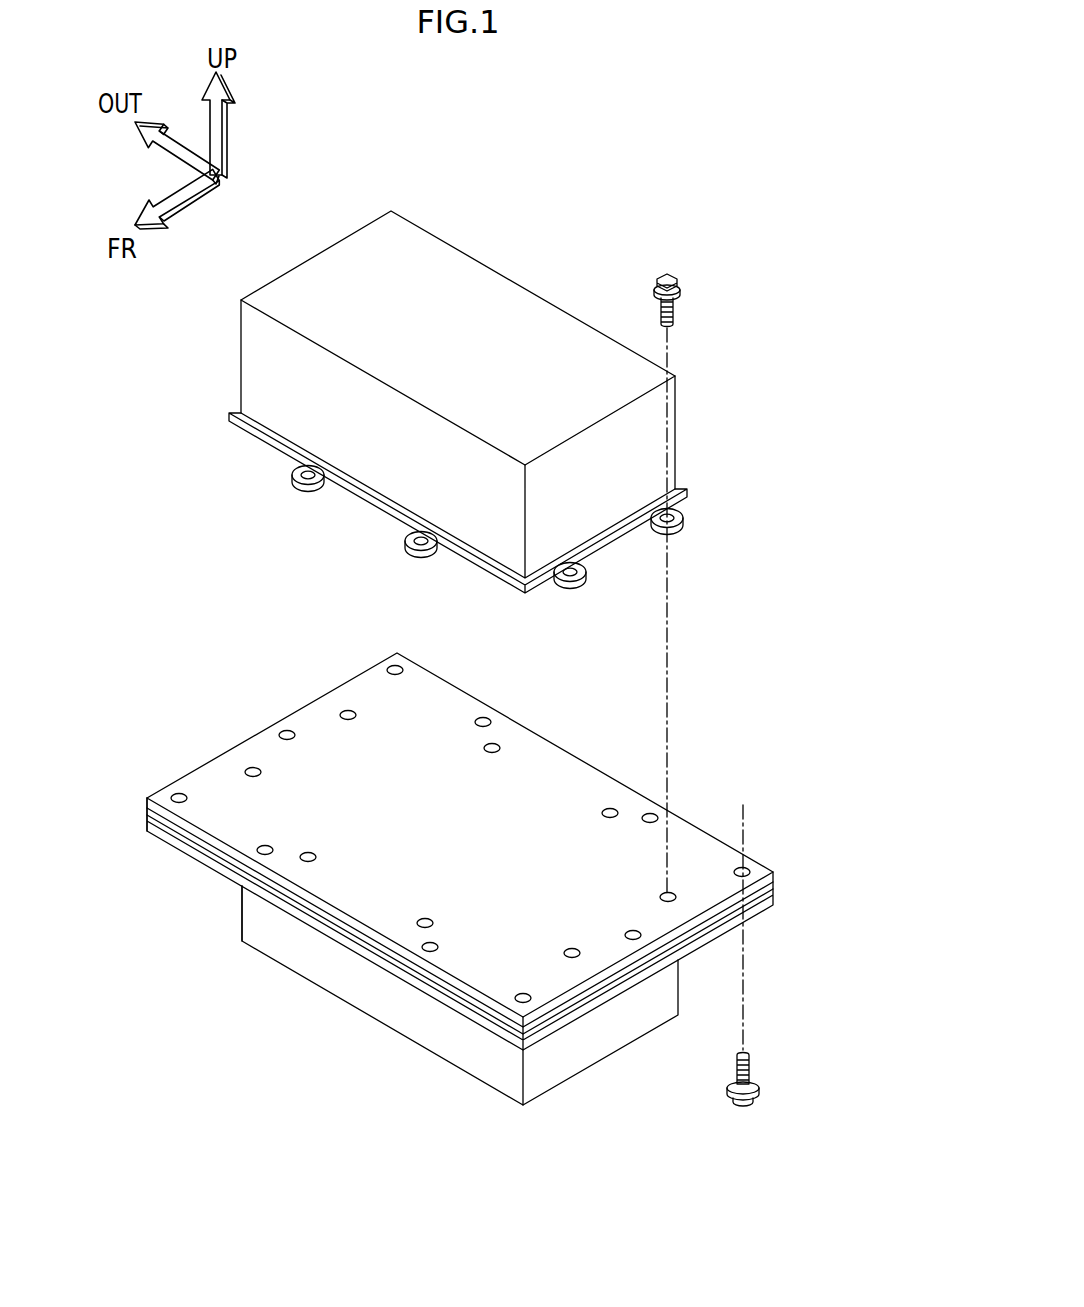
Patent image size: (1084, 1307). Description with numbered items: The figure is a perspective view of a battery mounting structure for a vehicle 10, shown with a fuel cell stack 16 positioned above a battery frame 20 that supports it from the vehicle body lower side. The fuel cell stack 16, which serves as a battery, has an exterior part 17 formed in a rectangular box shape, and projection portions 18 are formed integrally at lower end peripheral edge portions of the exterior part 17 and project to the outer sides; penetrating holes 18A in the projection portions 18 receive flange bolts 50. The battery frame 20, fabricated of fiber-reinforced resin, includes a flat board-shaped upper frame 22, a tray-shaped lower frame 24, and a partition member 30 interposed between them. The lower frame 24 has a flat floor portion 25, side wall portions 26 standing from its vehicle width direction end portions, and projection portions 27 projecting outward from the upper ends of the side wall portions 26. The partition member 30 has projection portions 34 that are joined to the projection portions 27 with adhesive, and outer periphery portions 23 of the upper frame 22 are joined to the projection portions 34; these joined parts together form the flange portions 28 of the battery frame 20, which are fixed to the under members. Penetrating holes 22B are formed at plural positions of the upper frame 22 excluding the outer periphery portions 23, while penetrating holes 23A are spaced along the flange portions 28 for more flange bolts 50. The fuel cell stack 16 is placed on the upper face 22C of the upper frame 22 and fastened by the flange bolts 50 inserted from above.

The battery mounting structure for a vehicle 10 is at (198, 645).
The fuel cell stack 16 is at (496, 268).
The exterior part 17 is at (347, 268).
The projection portions 18 is at (296, 482).
The penetrating holes 18A is at (308, 468).
The battery frame 20 is at (211, 724).
The upper frame 22 is at (689, 845).
The penetrating holes 22B is at (352, 718).
The upper face 22C is at (336, 884).
The outer periphery portions 23 is at (779, 877).
The penetrating holes 23A is at (290, 728).
The lower frame 24 is at (322, 996).
The floor portion 25 is at (428, 1053).
The side wall portions 26 is at (600, 1048).
The projection portions 27 is at (778, 901).
The flange portions 28 is at (877, 830).
The partition member 30 is at (143, 818).
The projection portions 34 is at (778, 893).
The flange bolts 50 is at (664, 272).